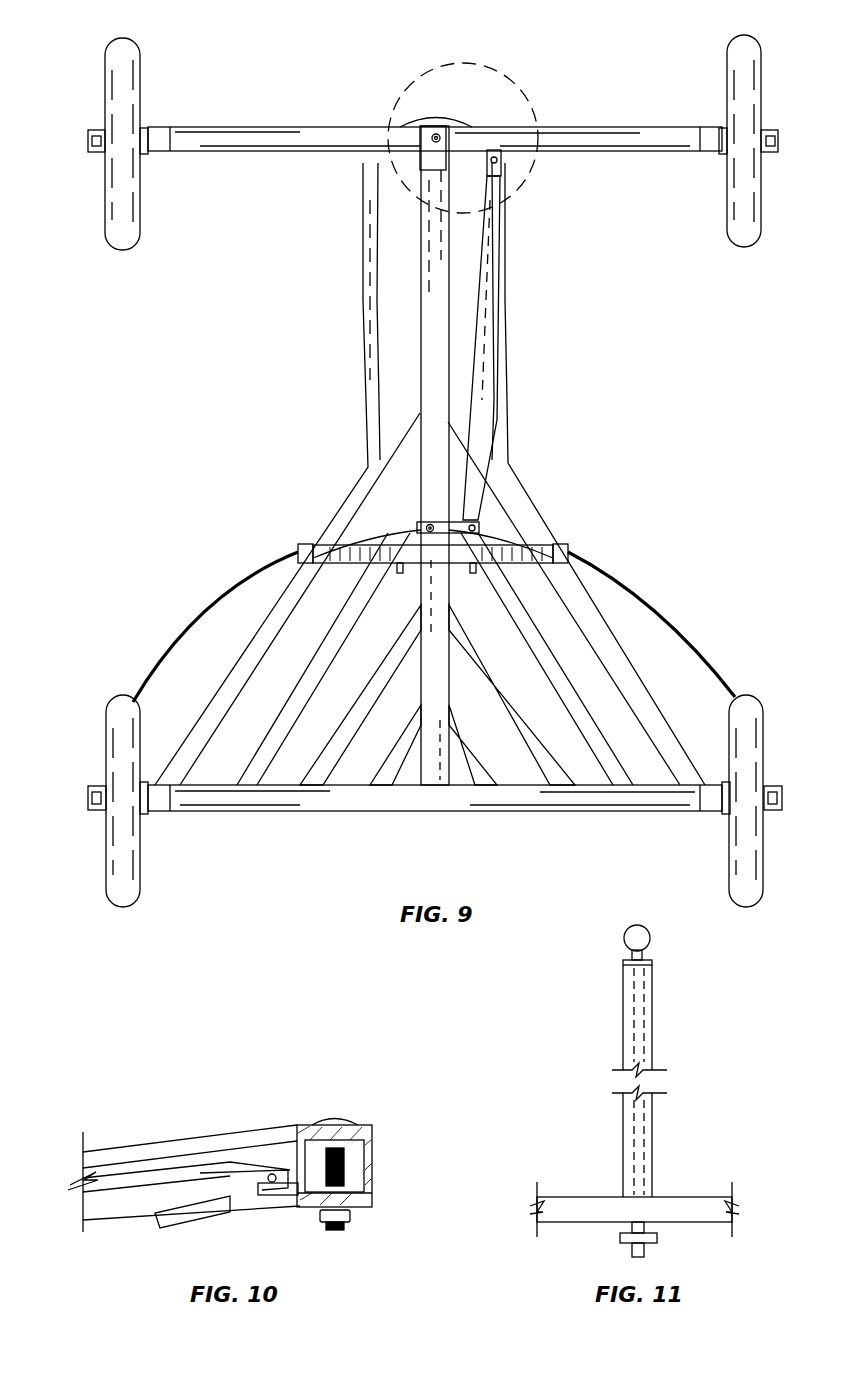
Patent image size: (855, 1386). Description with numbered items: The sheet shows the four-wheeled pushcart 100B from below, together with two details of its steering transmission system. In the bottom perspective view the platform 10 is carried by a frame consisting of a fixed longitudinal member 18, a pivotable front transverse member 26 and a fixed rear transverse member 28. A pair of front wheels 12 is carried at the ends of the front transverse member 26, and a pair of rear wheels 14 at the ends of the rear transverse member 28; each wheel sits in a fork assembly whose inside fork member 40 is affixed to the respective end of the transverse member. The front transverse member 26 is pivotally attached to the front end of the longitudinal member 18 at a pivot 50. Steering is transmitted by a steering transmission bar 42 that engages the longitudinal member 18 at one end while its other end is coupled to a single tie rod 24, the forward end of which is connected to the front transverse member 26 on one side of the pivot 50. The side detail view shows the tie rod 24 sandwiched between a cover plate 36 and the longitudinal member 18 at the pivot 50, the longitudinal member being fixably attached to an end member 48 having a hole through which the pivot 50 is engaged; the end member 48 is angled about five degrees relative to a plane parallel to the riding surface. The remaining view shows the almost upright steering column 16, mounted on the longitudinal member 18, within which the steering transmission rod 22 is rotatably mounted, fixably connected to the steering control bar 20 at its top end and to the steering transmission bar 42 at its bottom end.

In FIG. 9, the platform 10 is at (520, 86).
In FIG. 9, the front wheels 12 is at (126, 42).
In FIG. 9, the rear wheels 14 is at (116, 902).
In FIG. 11, the steering column 16 is at (658, 1078).
In FIG. 9, the longitudinal member 18 is at (456, 745).
In FIG. 10, the longitudinal member 18 is at (122, 1203).
In FIG. 11, the longitudinal member 18 is at (634, 1203).
In FIG. 11, the steering control bar 20 is at (616, 928).
In FIG. 9, the steering transmission rod 22 is at (420, 517).
In FIG. 11, the steering transmission rod 22 is at (700, 1266).
In FIG. 9, the tie rod 24 is at (478, 388).
In FIG. 10, the tie rod 24 is at (190, 1180).
In FIG. 9, the pivotable front transverse member 26 is at (270, 127).
In FIG. 10, the pivotable front transverse member 26 is at (372, 1163).
In FIG. 9, the fixed rear transverse member 28 is at (312, 812).
In FIG. 9, the cover plate 36 is at (466, 297).
In FIG. 10, the cover plate 36 is at (247, 1138).
In FIG. 9, the inside fork member 40 is at (150, 820).
In FIG. 9, the steering transmission bar 42 is at (472, 507).
In FIG. 11, the steering transmission bar 42 is at (601, 1253).
In FIG. 9, the end member 48 is at (397, 127).
In FIG. 10, the end member 48 is at (358, 1200).
In FIG. 9, the pivot 50 is at (438, 135).
In FIG. 10, the pivot 50 is at (350, 1220).
In FIG. 9, the pushcart 100B is at (697, 352).